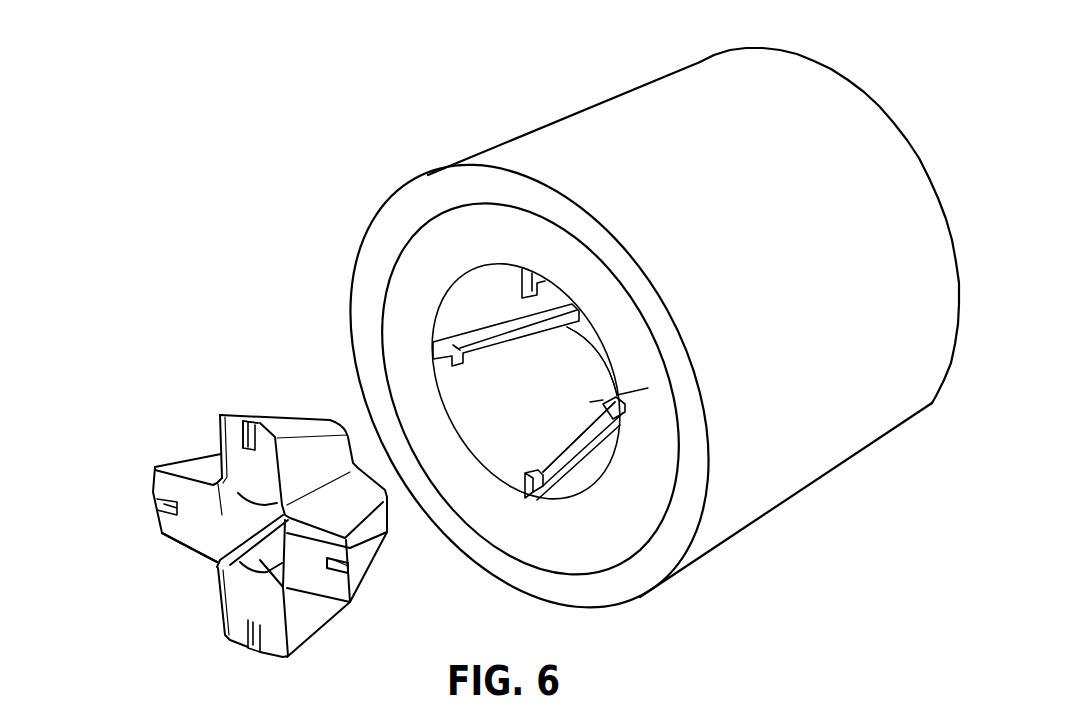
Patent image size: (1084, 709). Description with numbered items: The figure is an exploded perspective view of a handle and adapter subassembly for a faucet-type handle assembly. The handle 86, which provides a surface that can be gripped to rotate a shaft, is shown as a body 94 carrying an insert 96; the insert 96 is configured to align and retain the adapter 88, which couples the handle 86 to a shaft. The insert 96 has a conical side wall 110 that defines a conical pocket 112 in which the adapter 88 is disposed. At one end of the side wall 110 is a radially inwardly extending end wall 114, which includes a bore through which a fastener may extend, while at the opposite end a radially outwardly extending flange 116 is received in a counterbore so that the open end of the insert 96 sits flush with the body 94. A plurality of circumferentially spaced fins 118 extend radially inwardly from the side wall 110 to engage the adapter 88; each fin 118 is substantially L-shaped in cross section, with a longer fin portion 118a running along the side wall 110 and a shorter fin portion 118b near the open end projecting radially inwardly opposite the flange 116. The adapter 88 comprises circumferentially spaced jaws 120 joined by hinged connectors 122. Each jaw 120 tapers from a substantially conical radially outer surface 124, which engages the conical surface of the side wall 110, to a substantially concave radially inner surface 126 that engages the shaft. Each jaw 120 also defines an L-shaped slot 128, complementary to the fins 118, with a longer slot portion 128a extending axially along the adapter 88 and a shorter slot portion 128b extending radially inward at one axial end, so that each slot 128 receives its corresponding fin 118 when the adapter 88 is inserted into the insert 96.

The handle 86 is at (565, 77).
The adapter 88 is at (158, 382).
The body 94 is at (383, 240).
The insert 96 is at (415, 292).
The conical side wall 110 is at (715, 494).
The conical pocket 112 is at (470, 391).
The end wall 114 is at (757, 409).
The flange 116 is at (758, 470).
The fins 118 is at (619, 471).
The longer fin portion 118a is at (561, 472).
The shorter fin portion 118b is at (525, 491).
The jaws 120 is at (170, 521).
The hinged connectors 122 is at (222, 564).
The radially outer surface 124 is at (250, 639).
The radially inner surface 126 is at (222, 572).
The slot 128 is at (251, 408).
The longer slot portion 128a is at (273, 418).
The shorter slot portion 128b is at (250, 425).